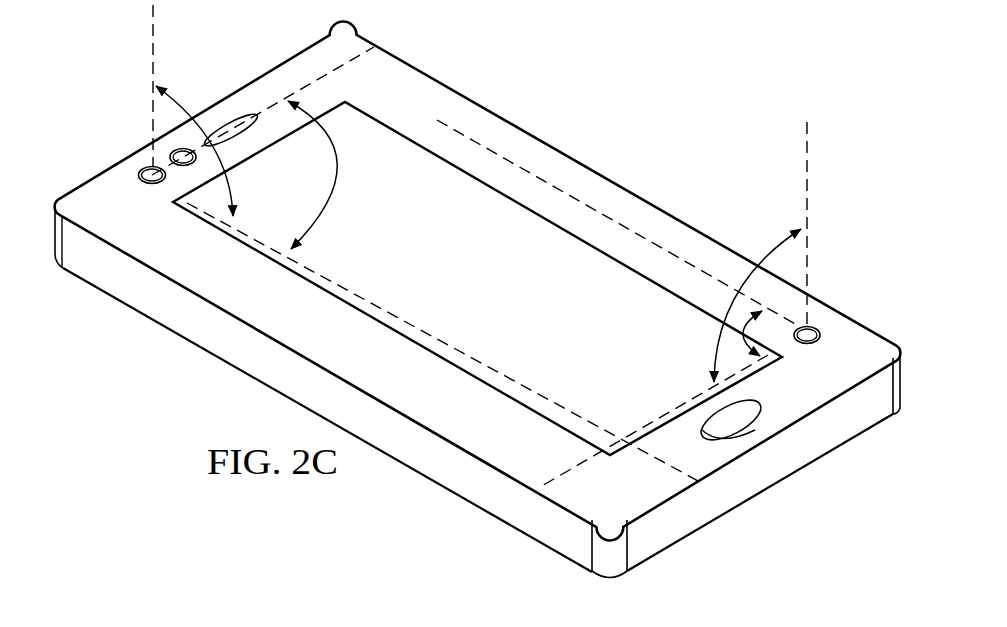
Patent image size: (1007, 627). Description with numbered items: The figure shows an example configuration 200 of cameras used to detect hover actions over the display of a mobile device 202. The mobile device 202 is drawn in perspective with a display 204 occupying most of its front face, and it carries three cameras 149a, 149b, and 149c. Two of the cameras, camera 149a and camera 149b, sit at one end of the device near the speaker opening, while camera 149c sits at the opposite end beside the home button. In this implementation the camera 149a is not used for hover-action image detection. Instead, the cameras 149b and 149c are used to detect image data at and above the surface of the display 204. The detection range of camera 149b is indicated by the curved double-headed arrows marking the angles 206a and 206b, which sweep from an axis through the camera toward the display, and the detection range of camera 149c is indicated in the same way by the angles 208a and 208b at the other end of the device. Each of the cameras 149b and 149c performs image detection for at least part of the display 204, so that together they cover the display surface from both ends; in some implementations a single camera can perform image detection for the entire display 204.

The electronic device 200 is at (573, 108).
The mobile device 202 is at (622, 200).
The display 204 is at (390, 141).
The angle 206a is at (338, 184).
The angle 206b is at (230, 188).
The angle 208a is at (722, 348).
The angle 208b is at (782, 245).
The camera 149a is at (182, 150).
The camera 149b is at (148, 171).
The camera 149c is at (818, 327).